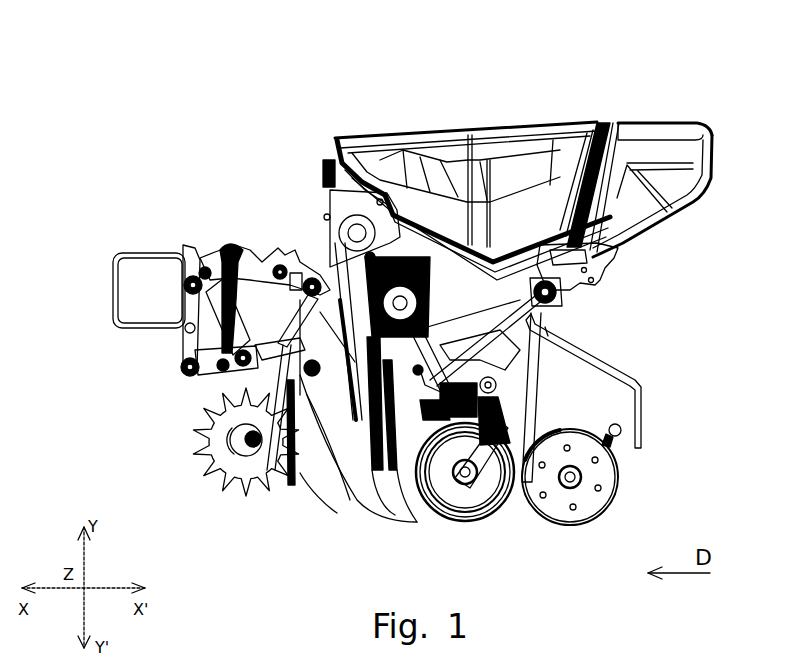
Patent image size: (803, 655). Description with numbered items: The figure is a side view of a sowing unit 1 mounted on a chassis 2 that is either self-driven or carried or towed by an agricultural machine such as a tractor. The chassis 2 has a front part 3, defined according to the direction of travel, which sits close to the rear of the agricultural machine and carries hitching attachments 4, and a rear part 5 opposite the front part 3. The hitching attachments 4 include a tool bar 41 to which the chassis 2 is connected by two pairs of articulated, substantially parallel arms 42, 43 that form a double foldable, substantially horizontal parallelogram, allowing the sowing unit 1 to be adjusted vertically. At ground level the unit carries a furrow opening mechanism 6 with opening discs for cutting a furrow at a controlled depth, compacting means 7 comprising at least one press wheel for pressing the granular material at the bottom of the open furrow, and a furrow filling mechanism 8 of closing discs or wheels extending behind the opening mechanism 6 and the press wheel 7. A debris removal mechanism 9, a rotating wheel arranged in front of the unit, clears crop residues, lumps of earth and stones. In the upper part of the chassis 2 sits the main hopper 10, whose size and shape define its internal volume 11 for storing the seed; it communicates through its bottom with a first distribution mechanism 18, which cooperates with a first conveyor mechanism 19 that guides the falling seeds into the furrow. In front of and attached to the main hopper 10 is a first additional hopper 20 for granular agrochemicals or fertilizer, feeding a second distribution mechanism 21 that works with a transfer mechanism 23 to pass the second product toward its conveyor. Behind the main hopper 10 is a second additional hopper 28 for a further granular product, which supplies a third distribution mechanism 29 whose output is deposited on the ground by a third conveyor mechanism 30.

The sowing unit 1 is at (276, 88).
The chassis 2 is at (262, 368).
The front part 3 is at (133, 402).
The hitching attachments 4 is at (207, 279).
The rear part 5 is at (643, 470).
The furrow opening mechanism 6 is at (350, 500).
The compacting means 7 is at (480, 497).
The furrow filling mechanism 8 is at (566, 503).
The debris removal mechanism 9 is at (245, 493).
The main hopper 10 is at (407, 128).
The internal volume 11 is at (553, 195).
The first distribution mechanism 18 is at (472, 135).
The first conveyor mechanism 19 is at (443, 500).
The first additional hopper 20 is at (369, 150).
The second distribution mechanism 21 is at (360, 220).
The transfer mechanism 23 is at (325, 250).
The second additional hopper 28 is at (688, 135).
The third distribution mechanism 29 is at (588, 293).
The third conveyor mechanism 30 is at (620, 352).
The tool bar 41 is at (143, 252).
The articulated arm 42 is at (258, 250).
The articulated arm 43 is at (240, 368).